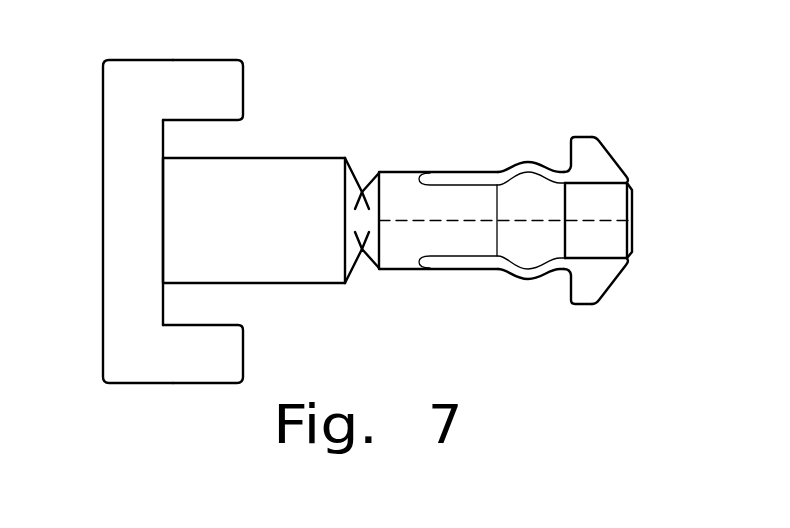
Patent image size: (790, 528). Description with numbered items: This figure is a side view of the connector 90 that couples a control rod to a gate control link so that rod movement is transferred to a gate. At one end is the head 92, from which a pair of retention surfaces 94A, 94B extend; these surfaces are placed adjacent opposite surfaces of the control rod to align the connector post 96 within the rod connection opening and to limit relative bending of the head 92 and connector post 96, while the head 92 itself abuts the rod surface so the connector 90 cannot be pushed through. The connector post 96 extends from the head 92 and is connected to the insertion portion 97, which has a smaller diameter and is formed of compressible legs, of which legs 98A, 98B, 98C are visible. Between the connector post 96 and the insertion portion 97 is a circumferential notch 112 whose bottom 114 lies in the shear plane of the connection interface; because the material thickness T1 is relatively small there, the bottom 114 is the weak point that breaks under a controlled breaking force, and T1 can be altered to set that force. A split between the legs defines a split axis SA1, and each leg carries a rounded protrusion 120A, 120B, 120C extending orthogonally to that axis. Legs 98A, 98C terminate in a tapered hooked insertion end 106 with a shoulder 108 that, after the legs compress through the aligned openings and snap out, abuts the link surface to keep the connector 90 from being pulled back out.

The connector 90 is at (363, 75).
The head 92 is at (103, 207).
The retention surface 94A is at (213, 121).
The retention surface 94B is at (216, 323).
The connector post 96 is at (288, 167).
The material thickness T1 is at (344, 222).
The notch 112 is at (359, 184).
The bottom 114 is at (365, 262).
The insertion portion 97 is at (400, 184).
The split axis SA1 is at (463, 220).
The leg 98A is at (492, 120).
The leg 98B is at (630, 230).
The leg 98C is at (492, 316).
The protrusion 120A is at (531, 160).
The protrusion 120B is at (533, 203).
The protrusion 120C is at (527, 284).
The shoulder 108 is at (572, 160).
The hooked insertion end 106 is at (632, 176).